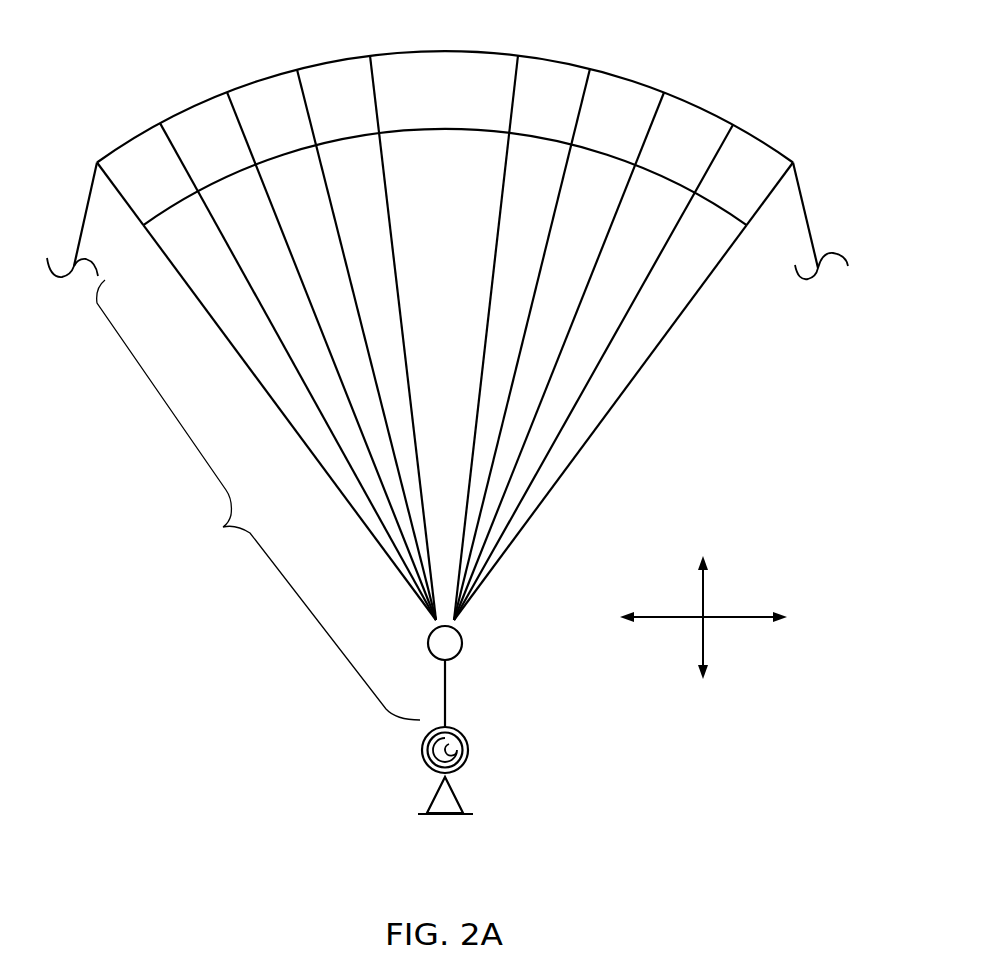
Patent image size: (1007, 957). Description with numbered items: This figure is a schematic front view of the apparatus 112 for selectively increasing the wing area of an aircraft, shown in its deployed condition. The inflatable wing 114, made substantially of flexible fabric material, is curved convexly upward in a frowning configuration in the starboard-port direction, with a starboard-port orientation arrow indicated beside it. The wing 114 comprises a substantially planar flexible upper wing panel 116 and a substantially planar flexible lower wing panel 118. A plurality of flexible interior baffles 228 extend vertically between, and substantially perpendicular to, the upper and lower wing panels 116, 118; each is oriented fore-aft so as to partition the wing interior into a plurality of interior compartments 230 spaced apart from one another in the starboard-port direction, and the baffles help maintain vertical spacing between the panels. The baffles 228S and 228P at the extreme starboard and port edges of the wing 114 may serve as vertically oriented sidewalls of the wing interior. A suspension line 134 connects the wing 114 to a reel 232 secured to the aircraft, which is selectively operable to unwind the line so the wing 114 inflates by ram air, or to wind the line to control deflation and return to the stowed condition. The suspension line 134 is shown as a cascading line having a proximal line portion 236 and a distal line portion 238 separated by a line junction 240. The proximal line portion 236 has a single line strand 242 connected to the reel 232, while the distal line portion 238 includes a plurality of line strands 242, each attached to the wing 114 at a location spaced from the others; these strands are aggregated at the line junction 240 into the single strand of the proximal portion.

The apparatus 112 is at (781, 60).
The inflatable wing 114 is at (698, 119).
The upper wing panel 116 is at (445, 50).
The lower wing panel 118 is at (446, 130).
The interior baffle 228 is at (238, 117).
The starboard interior baffle 228S is at (128, 207).
The port interior baffle 228P is at (767, 199).
The interior compartment 230 is at (229, 153).
The reel 232 is at (468, 757).
The suspension line 134 is at (258, 500).
The proximal line portion 236 is at (417, 670).
The distal line portion 238 is at (717, 409).
The line junction 240 is at (466, 650).
The line strand 242 is at (658, 345).